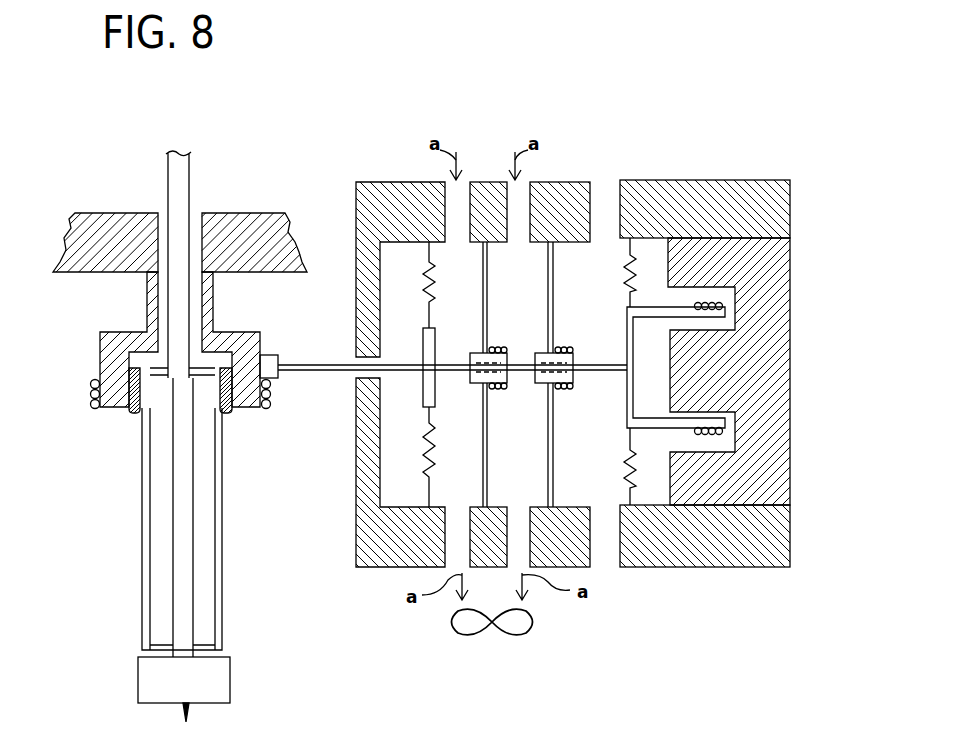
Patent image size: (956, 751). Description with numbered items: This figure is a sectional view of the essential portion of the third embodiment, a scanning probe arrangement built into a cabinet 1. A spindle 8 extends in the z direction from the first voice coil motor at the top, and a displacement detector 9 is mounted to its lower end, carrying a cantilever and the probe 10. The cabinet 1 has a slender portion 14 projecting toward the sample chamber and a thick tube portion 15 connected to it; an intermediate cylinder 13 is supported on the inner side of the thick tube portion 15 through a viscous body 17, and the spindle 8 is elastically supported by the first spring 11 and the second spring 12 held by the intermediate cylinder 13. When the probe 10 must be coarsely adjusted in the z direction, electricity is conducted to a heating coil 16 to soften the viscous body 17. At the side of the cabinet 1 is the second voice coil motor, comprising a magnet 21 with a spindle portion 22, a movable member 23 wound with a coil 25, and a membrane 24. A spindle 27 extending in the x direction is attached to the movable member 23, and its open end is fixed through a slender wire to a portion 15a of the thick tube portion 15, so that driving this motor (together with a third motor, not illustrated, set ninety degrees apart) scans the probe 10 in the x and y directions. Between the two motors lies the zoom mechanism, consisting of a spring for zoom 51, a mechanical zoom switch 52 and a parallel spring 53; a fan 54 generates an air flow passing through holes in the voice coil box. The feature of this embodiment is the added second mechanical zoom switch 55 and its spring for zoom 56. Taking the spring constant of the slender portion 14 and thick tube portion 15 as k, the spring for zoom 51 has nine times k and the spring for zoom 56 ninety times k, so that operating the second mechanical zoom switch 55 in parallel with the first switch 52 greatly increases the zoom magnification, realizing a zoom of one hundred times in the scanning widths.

The cabinet 1 is at (97, 213).
The spindle 8 is at (178, 180).
The displacement detector 9 is at (148, 678).
The probe 10 is at (188, 710).
The first spring 11 is at (163, 408).
The second spring 12 is at (170, 640).
The intermediate cylinder 13 is at (142, 565).
The slender portion 14 is at (148, 300).
The thick tube portion 15 is at (100, 355).
The portion of the thick tube portion 15a is at (272, 355).
The heating coil 16 is at (91, 396).
The viscous body 17 is at (135, 415).
The magnet 21 is at (782, 272).
The spindle portion 22 is at (725, 375).
The movable member 23 is at (630, 398).
The membrane 24 is at (632, 290).
The coil 25 is at (715, 435).
The spindle 27 is at (318, 373).
The spring for zoom 51 is at (482, 312).
The mechanical zoom switch 52 is at (472, 380).
The parallel spring 53 is at (453, 282).
The fan 54 is at (470, 627).
The second mechanical zoom switch 55 is at (537, 380).
The spring for zoom 56 is at (550, 302).